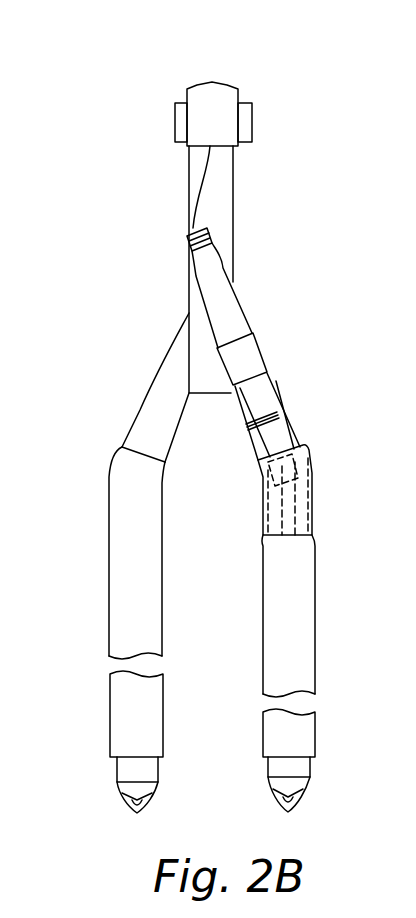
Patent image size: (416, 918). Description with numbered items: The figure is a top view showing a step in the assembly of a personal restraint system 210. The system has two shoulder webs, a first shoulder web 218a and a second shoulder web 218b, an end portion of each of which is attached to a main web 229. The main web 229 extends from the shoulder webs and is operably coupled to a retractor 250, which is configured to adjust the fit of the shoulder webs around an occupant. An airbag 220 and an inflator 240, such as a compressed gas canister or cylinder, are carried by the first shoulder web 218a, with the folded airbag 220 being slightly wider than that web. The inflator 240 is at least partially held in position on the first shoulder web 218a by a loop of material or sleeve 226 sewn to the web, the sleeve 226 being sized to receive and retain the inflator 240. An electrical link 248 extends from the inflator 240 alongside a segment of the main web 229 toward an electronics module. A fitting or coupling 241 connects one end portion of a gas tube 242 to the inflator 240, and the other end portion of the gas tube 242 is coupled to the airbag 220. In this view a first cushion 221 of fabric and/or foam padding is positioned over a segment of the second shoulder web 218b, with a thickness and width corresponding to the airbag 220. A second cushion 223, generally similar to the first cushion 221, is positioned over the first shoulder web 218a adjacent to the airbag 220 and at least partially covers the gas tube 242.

The personal restraint system 210 is at (75, 207).
The retractor 250 is at (228, 106).
The main web 229 is at (228, 178).
The electrical link 248 is at (200, 178).
The sleeve 226 is at (232, 360).
The inflator 240 is at (267, 407).
The fitting or coupling 241 is at (277, 445).
The gas tube 242 is at (313, 482).
The second cushion 223 is at (302, 513).
The airbag 220 is at (308, 625).
The first cushion 221 is at (110, 587).
The first shoulder web 218a is at (303, 772).
The second shoulder web 218b is at (125, 770).